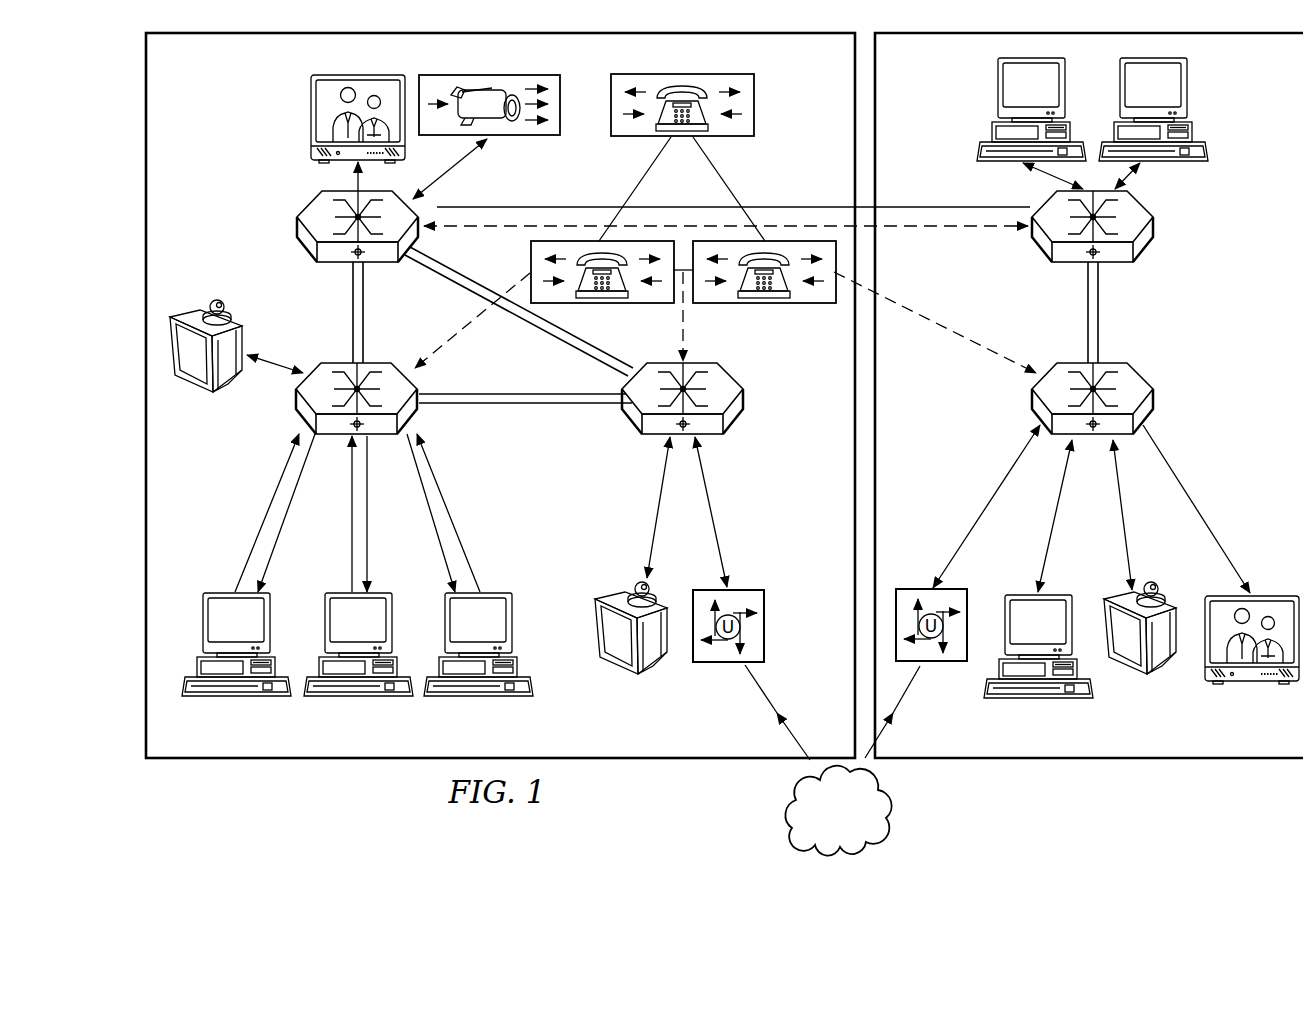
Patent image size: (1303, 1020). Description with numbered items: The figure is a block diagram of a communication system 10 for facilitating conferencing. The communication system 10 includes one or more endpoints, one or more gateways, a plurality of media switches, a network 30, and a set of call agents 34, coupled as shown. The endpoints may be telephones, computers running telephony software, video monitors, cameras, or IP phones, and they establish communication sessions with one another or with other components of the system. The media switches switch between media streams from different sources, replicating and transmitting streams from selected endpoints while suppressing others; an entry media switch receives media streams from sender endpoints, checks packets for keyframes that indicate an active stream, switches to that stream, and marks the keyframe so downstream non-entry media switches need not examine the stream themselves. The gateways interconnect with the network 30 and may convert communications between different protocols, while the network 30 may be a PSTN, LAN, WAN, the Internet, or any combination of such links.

The communication system 10 is at (662, 806).
The network 30 is at (893, 812).
The call agents 34 is at (795, 116).